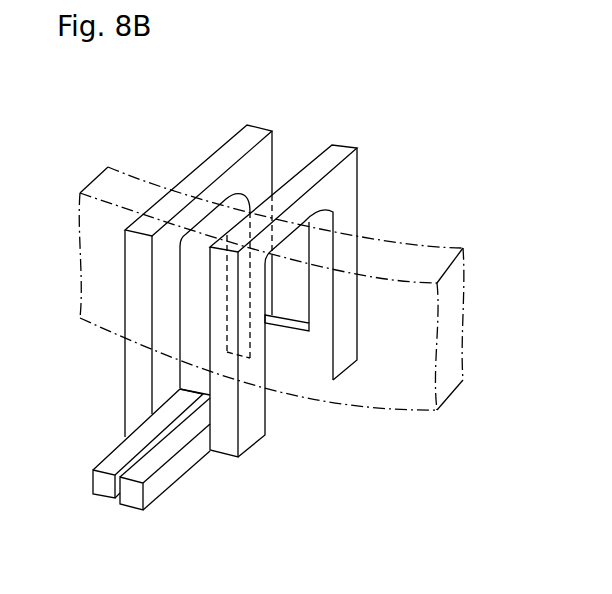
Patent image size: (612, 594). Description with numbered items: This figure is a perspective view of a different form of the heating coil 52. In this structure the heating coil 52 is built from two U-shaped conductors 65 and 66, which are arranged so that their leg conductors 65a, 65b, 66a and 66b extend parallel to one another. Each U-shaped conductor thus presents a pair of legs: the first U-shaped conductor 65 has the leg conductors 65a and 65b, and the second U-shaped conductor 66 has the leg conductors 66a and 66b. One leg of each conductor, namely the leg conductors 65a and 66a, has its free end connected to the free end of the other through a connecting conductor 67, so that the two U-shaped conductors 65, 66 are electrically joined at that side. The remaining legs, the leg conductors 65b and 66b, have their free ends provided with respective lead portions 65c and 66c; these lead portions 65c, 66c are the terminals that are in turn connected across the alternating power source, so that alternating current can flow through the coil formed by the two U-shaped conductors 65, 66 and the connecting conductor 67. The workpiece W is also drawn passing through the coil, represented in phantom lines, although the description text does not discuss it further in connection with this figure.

The heating coil 52 is at (283, 103).
The web W is at (107, 188).
The U-shaped conductor 65 is at (223, 162).
The leg conductor 65a is at (275, 162).
The leg conductor 65b is at (138, 312).
The lead portion 65c is at (113, 463).
The U-shaped conductor 66 is at (335, 153).
The leg conductor 66a is at (357, 217).
The leg conductor 66b is at (227, 368).
The lead portion 66c is at (150, 490).
The connecting conductor 67 is at (295, 330).